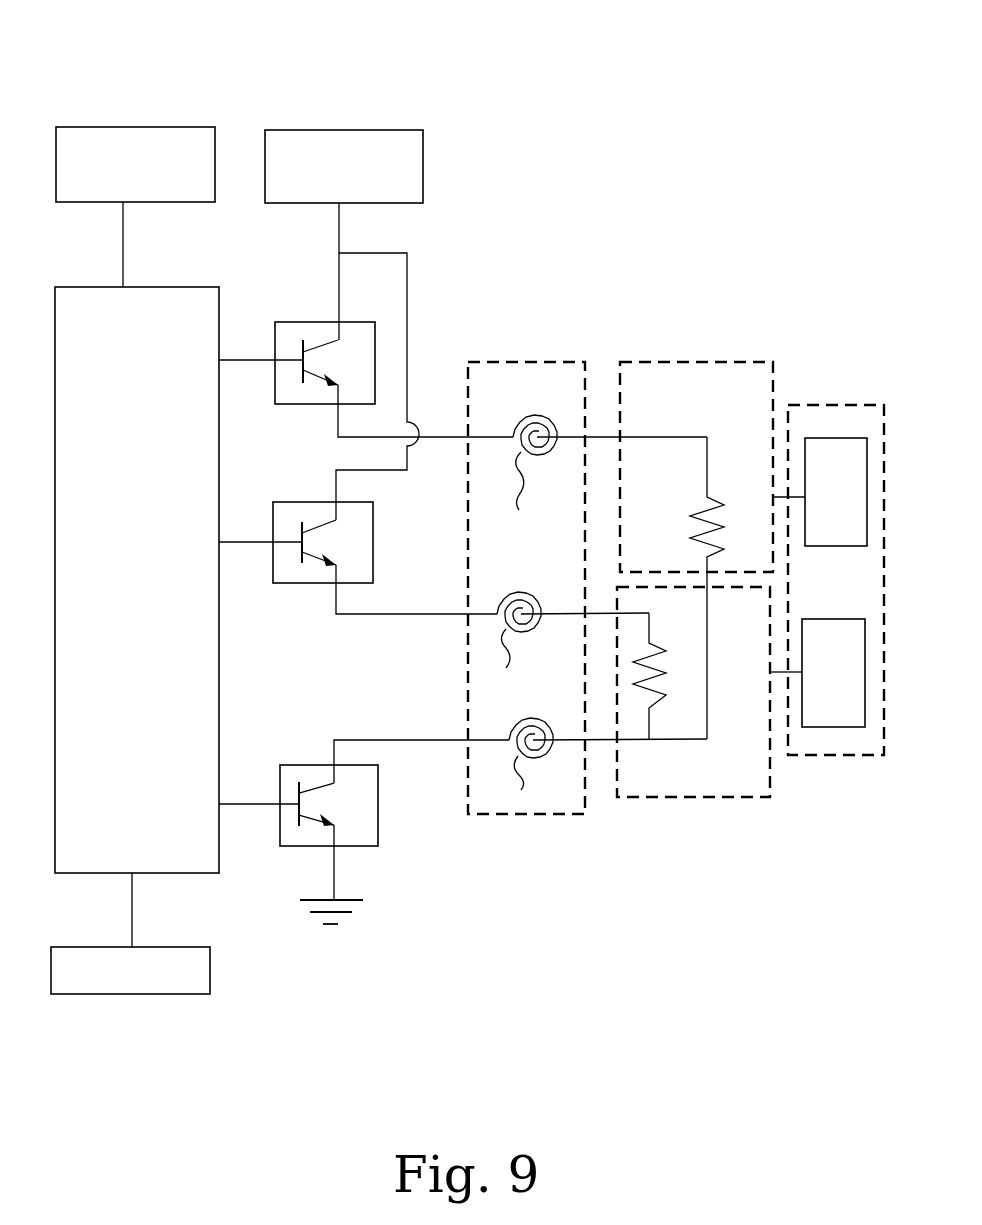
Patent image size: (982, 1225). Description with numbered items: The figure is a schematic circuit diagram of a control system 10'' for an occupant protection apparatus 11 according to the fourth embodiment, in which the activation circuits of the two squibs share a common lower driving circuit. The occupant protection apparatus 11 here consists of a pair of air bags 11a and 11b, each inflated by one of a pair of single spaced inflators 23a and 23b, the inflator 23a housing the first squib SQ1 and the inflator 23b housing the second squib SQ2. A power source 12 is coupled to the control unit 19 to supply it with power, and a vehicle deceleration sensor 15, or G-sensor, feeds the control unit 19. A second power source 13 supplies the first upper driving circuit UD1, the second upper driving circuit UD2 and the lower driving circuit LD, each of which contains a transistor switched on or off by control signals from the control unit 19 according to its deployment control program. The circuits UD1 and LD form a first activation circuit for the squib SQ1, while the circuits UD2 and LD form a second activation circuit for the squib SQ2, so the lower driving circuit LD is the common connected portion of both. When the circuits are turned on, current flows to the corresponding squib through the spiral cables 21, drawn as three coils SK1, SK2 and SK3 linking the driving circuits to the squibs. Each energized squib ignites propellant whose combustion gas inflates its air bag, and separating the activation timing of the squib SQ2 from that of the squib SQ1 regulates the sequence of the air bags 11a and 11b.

The control system 10'' is at (430, 32).
The power source 12 is at (110, 127).
The power source 13 is at (308, 130).
The control unit 19 is at (93, 287).
The vehicle deceleration sensor 15 is at (185, 994).
The first upper driving circuit UD1 is at (307, 322).
The second upper driving circuit UD2 is at (315, 583).
The lower driving circuit LD is at (378, 825).
The spiral cables 21 is at (528, 362).
The coil SK1 is at (603, 476).
The coil SK2 is at (572, 643).
The coil SK3 is at (605, 764).
The inflator 23a is at (696, 417).
The inflator 23b is at (655, 797).
The first squib SQ1 is at (697, 497).
The second squib SQ2 is at (658, 653).
The occupant protection apparatus 11 is at (808, 400).
The air bag 11a is at (830, 438).
The air bag 11b is at (833, 727).